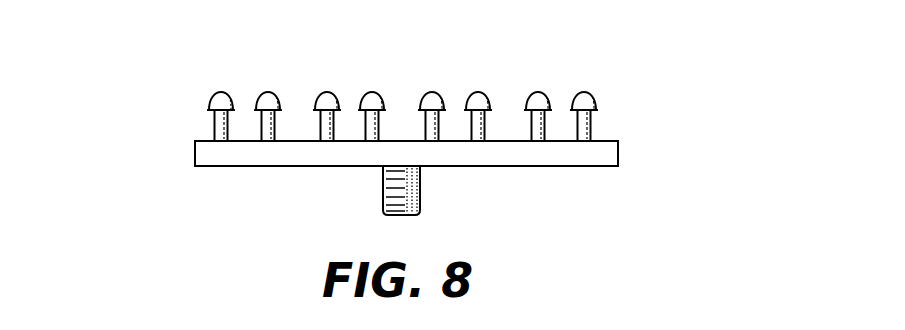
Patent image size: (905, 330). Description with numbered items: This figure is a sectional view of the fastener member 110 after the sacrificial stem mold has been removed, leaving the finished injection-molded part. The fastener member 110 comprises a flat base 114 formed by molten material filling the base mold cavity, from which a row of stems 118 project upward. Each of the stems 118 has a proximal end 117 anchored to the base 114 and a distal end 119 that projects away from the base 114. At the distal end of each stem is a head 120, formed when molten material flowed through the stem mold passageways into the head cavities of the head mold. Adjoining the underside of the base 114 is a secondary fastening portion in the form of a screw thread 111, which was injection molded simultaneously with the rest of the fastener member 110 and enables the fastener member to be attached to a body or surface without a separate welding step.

The fastener member 110 is at (435, 126).
The screw thread 111 is at (383, 193).
The base 114 is at (224, 158).
The proximal end 117 is at (212, 130).
The stems 118 is at (630, 157).
The distal end 119 is at (213, 123).
The heads 120 is at (213, 100).